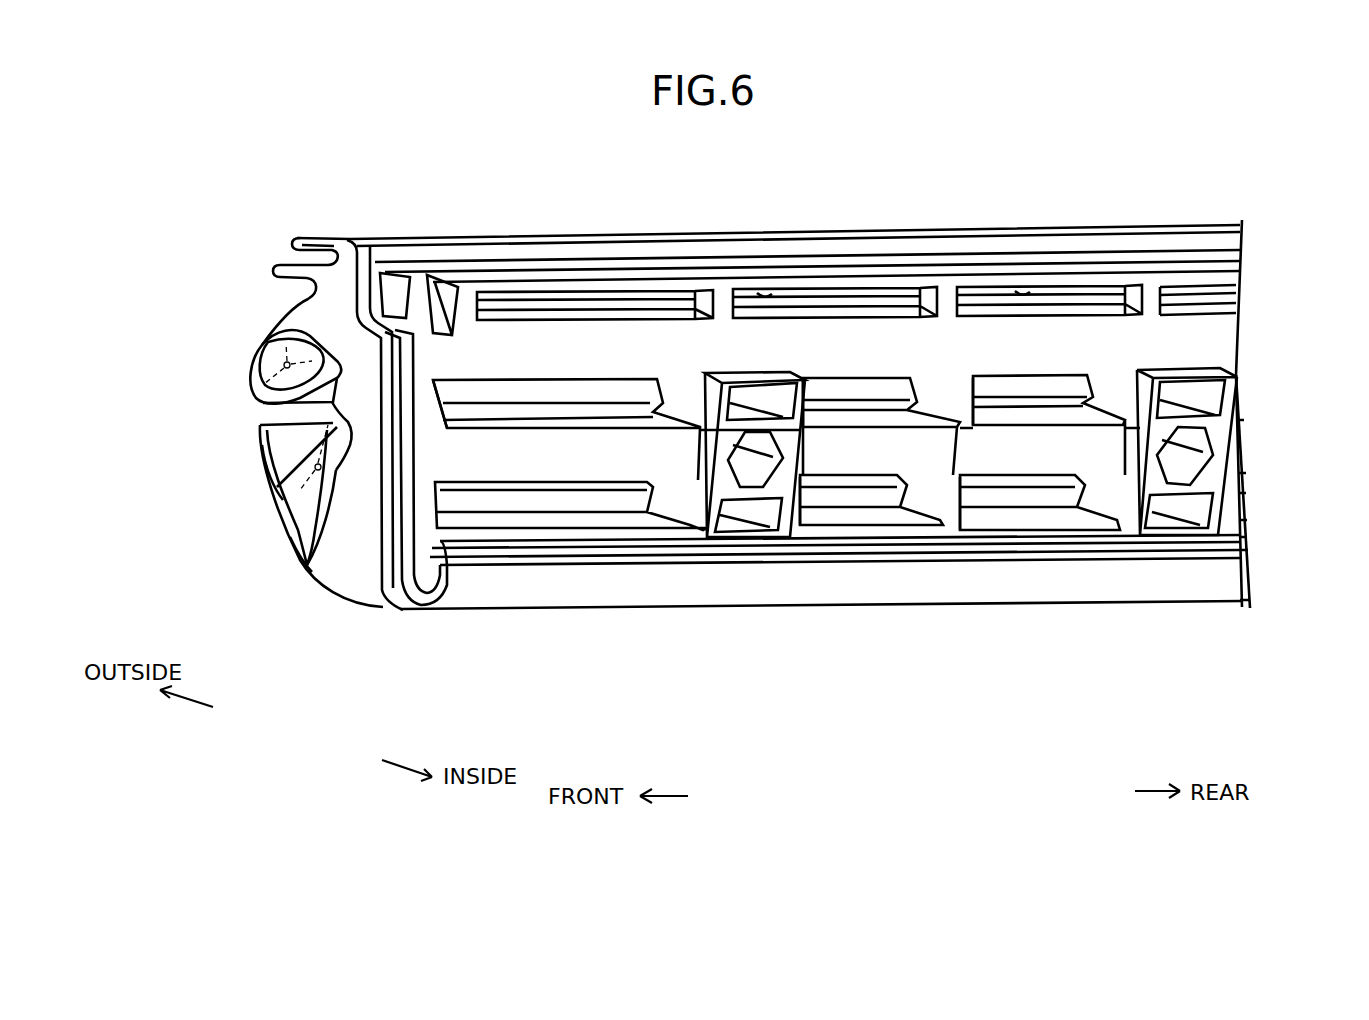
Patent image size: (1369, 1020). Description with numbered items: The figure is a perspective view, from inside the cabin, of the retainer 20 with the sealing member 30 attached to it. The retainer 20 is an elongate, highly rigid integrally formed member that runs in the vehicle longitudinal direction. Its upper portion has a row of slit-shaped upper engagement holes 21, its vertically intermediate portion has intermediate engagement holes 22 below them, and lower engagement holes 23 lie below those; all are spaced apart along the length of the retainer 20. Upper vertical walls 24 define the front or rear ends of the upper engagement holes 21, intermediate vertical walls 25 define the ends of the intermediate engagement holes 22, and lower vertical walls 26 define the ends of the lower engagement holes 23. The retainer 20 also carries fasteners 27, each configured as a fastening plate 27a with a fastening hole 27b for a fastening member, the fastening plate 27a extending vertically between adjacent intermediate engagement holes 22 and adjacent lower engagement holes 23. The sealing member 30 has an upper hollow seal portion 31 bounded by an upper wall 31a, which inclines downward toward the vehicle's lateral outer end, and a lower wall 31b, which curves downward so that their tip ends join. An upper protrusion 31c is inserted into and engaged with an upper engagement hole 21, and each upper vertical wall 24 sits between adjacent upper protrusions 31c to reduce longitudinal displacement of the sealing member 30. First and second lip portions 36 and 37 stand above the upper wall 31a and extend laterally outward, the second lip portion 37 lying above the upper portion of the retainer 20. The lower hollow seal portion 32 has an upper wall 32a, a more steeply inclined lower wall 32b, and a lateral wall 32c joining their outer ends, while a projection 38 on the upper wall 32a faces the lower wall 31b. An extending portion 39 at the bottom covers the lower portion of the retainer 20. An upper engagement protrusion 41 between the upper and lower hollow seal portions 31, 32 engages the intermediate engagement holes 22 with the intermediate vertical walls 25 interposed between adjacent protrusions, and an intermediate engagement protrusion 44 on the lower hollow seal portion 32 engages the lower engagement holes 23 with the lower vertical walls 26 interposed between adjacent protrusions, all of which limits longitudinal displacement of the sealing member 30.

The retainer 20 is at (612, 355).
The upper engagement holes 21 is at (860, 294).
The intermediate engagement holes 22 is at (890, 387).
The lower engagement holes 23 is at (918, 517).
The upper vertical walls 24 is at (466, 303).
The intermediate vertical walls 25 is at (433, 375).
The lower vertical walls 26 is at (425, 500).
The fasteners 27 is at (795, 497).
The fastening plate 27a is at (727, 482).
The fastening hole 27b is at (747, 487).
The sealing member 30 is at (540, 236).
The upper hollow seal portion 31 is at (260, 347).
The upper wall 31a is at (260, 327).
The lower wall 31b is at (338, 432).
The upper protrusion 31c is at (763, 297).
The lower hollow seal portion 32 is at (280, 528).
The upper wall 32a is at (297, 403).
The lower wall 32b is at (290, 553).
The lateral wall 32c is at (262, 493).
The first lip portion 36 is at (280, 263).
The second lip portion 37 is at (303, 237).
The projection 38 is at (260, 437).
The extending portion 39 is at (612, 610).
The upper engagement protrusion 41 is at (820, 390).
The intermediate engagement protrusion 44 is at (863, 497).